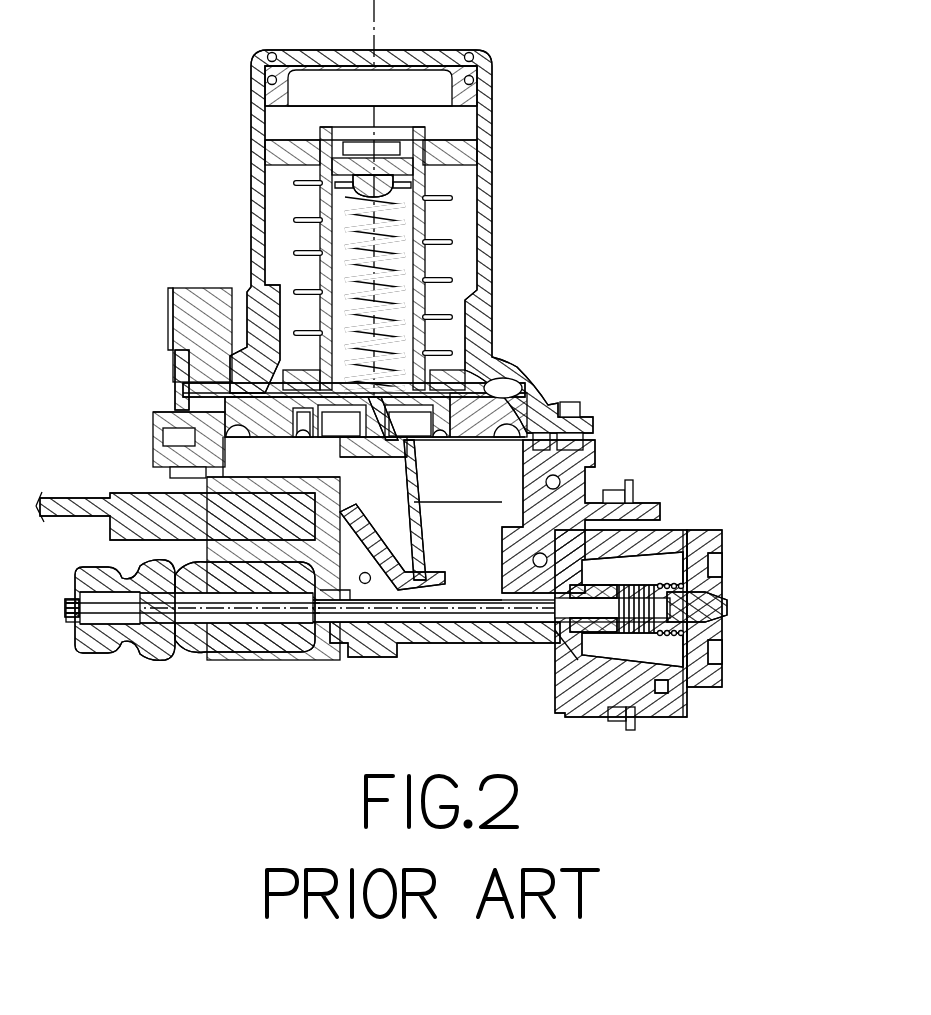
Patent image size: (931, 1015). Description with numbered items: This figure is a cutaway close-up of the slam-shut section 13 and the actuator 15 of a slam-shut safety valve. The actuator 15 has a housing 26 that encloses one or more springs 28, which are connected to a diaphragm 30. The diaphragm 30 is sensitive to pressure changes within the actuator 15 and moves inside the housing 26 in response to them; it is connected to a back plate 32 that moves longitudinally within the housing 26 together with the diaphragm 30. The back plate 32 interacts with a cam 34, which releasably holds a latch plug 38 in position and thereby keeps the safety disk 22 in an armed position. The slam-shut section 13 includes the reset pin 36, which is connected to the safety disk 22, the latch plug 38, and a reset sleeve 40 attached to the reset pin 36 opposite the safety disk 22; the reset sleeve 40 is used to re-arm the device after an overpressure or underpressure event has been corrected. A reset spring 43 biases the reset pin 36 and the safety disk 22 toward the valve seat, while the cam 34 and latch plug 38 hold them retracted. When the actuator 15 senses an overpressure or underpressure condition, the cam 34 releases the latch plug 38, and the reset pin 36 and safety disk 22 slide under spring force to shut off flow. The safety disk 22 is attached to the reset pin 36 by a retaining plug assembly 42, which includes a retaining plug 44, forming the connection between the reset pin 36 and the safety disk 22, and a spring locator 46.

The slam-shut section 13 is at (518, 700).
The actuator 15 is at (429, 237).
The safety disk 22 is at (723, 690).
The housing 26 is at (490, 110).
The springs 28 is at (475, 190).
The diaphragm 30 is at (183, 390).
The back plate 32 is at (380, 485).
The cam 34 is at (365, 533).
The reset pin 36 is at (515, 600).
The latch plug 38 is at (320, 655).
The reset sleeve 40 is at (140, 655).
The retaining plug assembly 42 is at (650, 634).
The reset spring 43 is at (647, 583).
The retaining plug 44 is at (727, 606).
The spring locator 46 is at (600, 640).